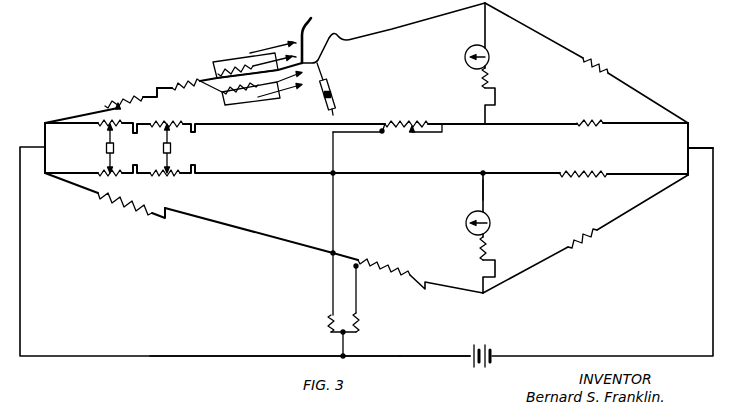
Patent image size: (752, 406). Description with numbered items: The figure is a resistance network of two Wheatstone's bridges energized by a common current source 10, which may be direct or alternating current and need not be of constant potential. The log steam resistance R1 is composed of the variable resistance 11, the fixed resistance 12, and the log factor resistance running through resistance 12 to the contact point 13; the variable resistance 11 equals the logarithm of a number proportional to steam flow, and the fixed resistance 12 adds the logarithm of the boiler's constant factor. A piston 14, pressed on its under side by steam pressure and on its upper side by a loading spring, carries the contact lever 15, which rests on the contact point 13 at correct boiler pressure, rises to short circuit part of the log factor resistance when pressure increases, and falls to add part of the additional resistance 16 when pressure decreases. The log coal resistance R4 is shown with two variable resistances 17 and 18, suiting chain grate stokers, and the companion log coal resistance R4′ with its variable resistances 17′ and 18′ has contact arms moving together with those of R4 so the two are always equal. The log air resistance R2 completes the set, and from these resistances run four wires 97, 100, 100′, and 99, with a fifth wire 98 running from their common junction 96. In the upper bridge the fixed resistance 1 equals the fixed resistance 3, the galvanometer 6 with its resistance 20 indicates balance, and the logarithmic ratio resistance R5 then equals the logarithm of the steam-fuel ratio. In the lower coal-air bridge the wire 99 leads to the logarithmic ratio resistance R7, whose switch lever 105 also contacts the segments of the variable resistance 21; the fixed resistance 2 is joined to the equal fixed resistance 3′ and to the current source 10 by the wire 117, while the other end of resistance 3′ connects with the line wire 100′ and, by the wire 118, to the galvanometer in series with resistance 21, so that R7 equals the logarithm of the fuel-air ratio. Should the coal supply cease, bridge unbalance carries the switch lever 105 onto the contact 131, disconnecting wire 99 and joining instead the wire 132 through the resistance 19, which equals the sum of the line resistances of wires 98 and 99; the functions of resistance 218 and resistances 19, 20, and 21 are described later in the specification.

The fixed resistance 1 is at (586, 63).
The fixed resistance 2 is at (585, 234).
The fixed resistance 3 is at (590, 116).
The fixed resistance 3′ is at (583, 167).
The galvanometer 6 is at (484, 120).
The current source 10 is at (485, 345).
The variable resistance 11 is at (103, 101).
The fixed resistance 12 is at (229, 85).
The contact point 13 is at (314, 37).
The piston 14 is at (336, 93).
The contact lever 15 is at (304, 58).
The additional resistance 16 is at (254, 96).
The variable resistance 17 is at (103, 127).
The variable resistance 17′ is at (103, 171).
The variable resistance 18 is at (160, 117).
The variable resistance 18′ is at (166, 180).
The resistance 19 is at (363, 323).
The resistance 20 is at (477, 96).
The variable resistance 21 is at (475, 265).
The common junction 96 is at (45, 132).
The wire 97 is at (422, 28).
The wire 98 is at (200, 356).
The wire 99 is at (254, 236).
The wire 100 is at (259, 129).
The line wire 100′ is at (302, 170).
The switch lever 105 is at (385, 268).
The wire 117 is at (712, 270).
The wire 118 is at (483, 194).
The contact 131 is at (355, 266).
The wire 132 is at (418, 355).
The resistance 218 is at (319, 336).
The log steam resistance R1 is at (250, 53).
The log air resistance R2 is at (115, 203).
The log coal resistance R4 is at (97, 137).
The log coal resistance R4′ is at (97, 162).
The logarithmic ratio resistance R5 is at (387, 117).
The logarithmic ratio resistance R7 is at (420, 282).